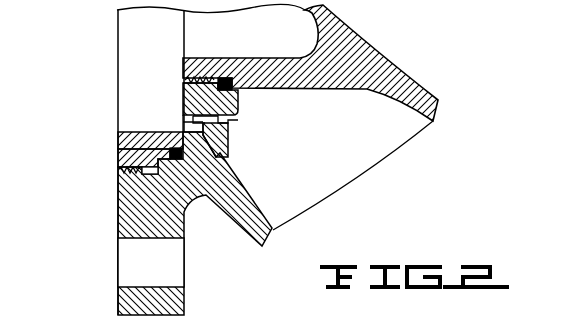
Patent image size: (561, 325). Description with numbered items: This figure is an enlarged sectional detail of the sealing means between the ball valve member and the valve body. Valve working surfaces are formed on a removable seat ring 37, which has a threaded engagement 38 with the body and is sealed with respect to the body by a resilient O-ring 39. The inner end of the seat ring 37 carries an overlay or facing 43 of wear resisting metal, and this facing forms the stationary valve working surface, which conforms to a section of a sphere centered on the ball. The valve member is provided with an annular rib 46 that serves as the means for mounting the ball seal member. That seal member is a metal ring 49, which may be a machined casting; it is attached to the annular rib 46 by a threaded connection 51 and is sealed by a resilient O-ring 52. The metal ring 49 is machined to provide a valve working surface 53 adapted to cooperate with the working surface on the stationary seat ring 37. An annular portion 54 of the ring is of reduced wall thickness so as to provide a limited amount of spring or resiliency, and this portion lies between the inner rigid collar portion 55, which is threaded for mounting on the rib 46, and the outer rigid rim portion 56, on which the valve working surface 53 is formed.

The removable seat ring 37 is at (130, 132).
The threaded engagement 38 is at (118, 170).
The resilient O-ring 39 is at (118, 152).
The facing 43 is at (183, 133).
The annular rib 46 is at (272, 62).
The metal ring 49 is at (183, 92).
The threaded connection 51 is at (185, 80).
The resilient O-ring 52 is at (224, 78).
The valve working surface 53 is at (228, 145).
The annular portion 54 is at (213, 121).
The inner rigid collar portion 55 is at (238, 103).
The outer rigid rim portion 56 is at (222, 157).